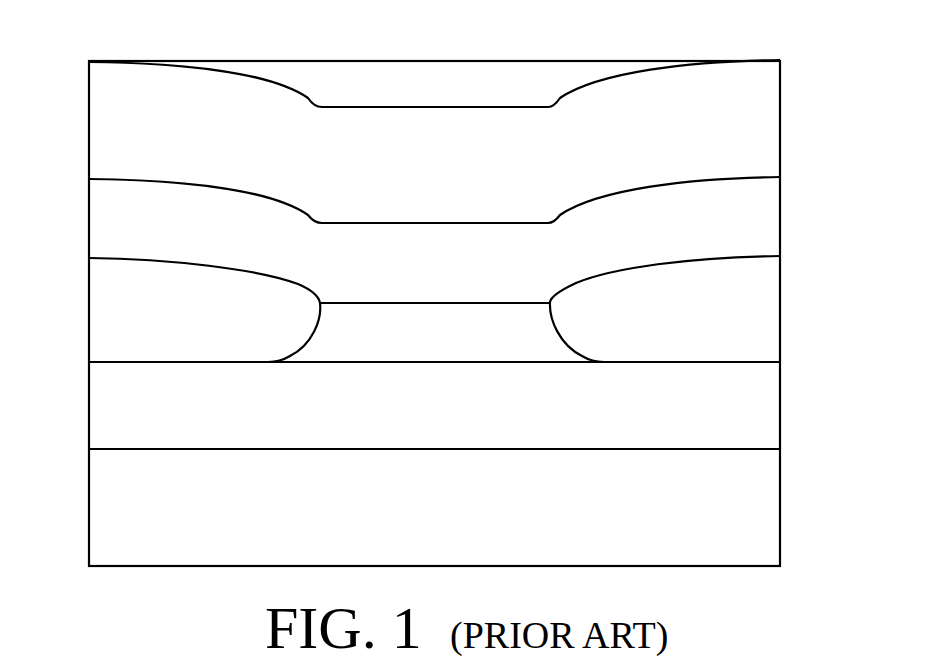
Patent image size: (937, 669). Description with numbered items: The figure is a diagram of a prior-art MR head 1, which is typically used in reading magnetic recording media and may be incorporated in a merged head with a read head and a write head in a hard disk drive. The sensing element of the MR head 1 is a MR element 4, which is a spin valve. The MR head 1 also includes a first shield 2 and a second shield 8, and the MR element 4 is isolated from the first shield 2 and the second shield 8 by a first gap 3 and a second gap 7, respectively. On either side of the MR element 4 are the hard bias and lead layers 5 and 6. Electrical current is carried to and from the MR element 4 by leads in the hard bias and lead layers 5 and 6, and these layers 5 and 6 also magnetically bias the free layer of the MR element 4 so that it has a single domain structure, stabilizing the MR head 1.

The MR head 1 is at (446, 58).
The first shield 2 is at (102, 511).
The first gap 3 is at (102, 406).
The MR element 4 is at (537, 355).
The hard bias and lead layer 5 is at (102, 321).
The hard bias and lead layer 6 is at (772, 318).
The second gap 7 is at (773, 220).
The second shield 8 is at (773, 126).